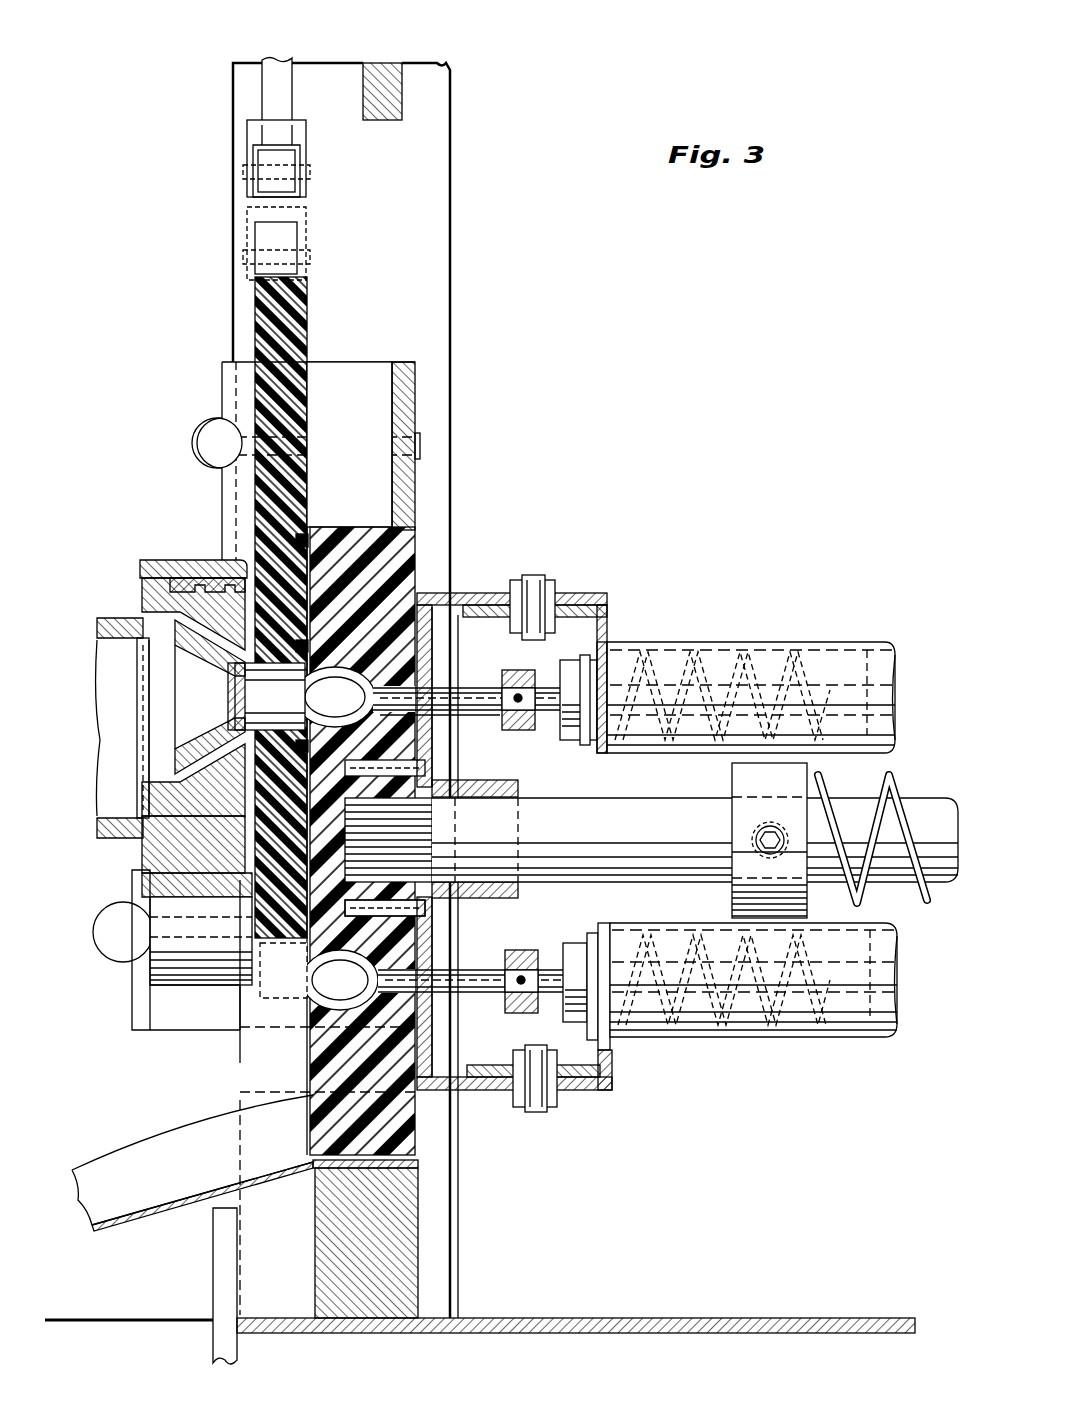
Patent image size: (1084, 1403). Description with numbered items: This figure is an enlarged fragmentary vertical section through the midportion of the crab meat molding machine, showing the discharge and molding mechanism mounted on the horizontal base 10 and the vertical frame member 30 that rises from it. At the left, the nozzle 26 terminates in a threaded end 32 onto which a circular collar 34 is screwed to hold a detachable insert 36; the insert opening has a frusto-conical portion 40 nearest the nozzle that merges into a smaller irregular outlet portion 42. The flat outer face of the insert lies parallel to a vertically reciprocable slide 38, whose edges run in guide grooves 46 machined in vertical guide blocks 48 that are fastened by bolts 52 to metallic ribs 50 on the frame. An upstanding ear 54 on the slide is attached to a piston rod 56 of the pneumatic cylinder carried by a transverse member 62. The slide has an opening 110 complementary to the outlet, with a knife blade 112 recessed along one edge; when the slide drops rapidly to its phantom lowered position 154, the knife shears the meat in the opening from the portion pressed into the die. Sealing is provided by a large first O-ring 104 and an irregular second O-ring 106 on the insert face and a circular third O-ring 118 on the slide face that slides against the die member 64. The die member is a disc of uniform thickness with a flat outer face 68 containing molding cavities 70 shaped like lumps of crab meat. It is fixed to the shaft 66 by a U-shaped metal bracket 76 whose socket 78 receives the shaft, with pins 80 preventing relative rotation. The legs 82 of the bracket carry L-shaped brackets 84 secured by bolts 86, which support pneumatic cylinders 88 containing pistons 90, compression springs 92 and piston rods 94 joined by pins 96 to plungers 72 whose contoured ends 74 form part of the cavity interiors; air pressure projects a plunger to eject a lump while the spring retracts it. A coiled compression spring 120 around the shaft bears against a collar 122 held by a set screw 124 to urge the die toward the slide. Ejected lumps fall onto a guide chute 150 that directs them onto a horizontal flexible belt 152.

The horizontal base 10 is at (685, 1318).
The nozzle 26 is at (143, 640).
The vertical frame member 30 is at (440, 162).
The threaded end 32 is at (142, 882).
The circular collar 34 is at (150, 560).
The detachable insert 36 is at (152, 808).
The slide 38 is at (256, 302).
The frusto-conical portion 40 is at (178, 702).
The outlet portion 42 is at (210, 688).
The guide grooves 46 is at (312, 390).
The vertical guide blocks 48 is at (360, 370).
The metallic ribs 50 is at (415, 412).
The bolts 52 is at (207, 438).
The upstanding ear 54 is at (252, 197).
The piston rod 56 is at (295, 72).
The transverse member 62 is at (375, 60).
The die member 64 is at (408, 560).
The shaft 66 is at (622, 798).
The flat outer face 68 is at (290, 1030).
The molding cavities 70 is at (375, 690).
The plungers 72 is at (490, 740).
The contour 74 is at (392, 968).
The metal bracket 76 is at (436, 1050).
The socket 78 is at (518, 785).
The pins 80 is at (430, 848).
The legs 82 is at (575, 590).
The L-shaped brackets 84 is at (605, 632).
The bolts 86 is at (525, 575).
The pneumatic cylinders 88 is at (765, 642).
The pistons 90 is at (825, 660).
The compression springs 92 is at (650, 665).
The piston rods 94 is at (545, 675).
The pins 96 is at (525, 672).
The first O-ring 104 is at (244, 560).
The second O-ring 106 is at (150, 665).
The opening 110 is at (420, 742).
The knife blade 112 is at (428, 645).
The third O-ring 118 is at (305, 535).
The coiled compression spring 120 is at (890, 775).
The collar 122 is at (735, 812).
The set screw 124 is at (775, 835).
The guide chute 150 is at (205, 1192).
The horizontal flexible belt 152 is at (148, 1318).
The lowered position 154 is at (240, 1046).